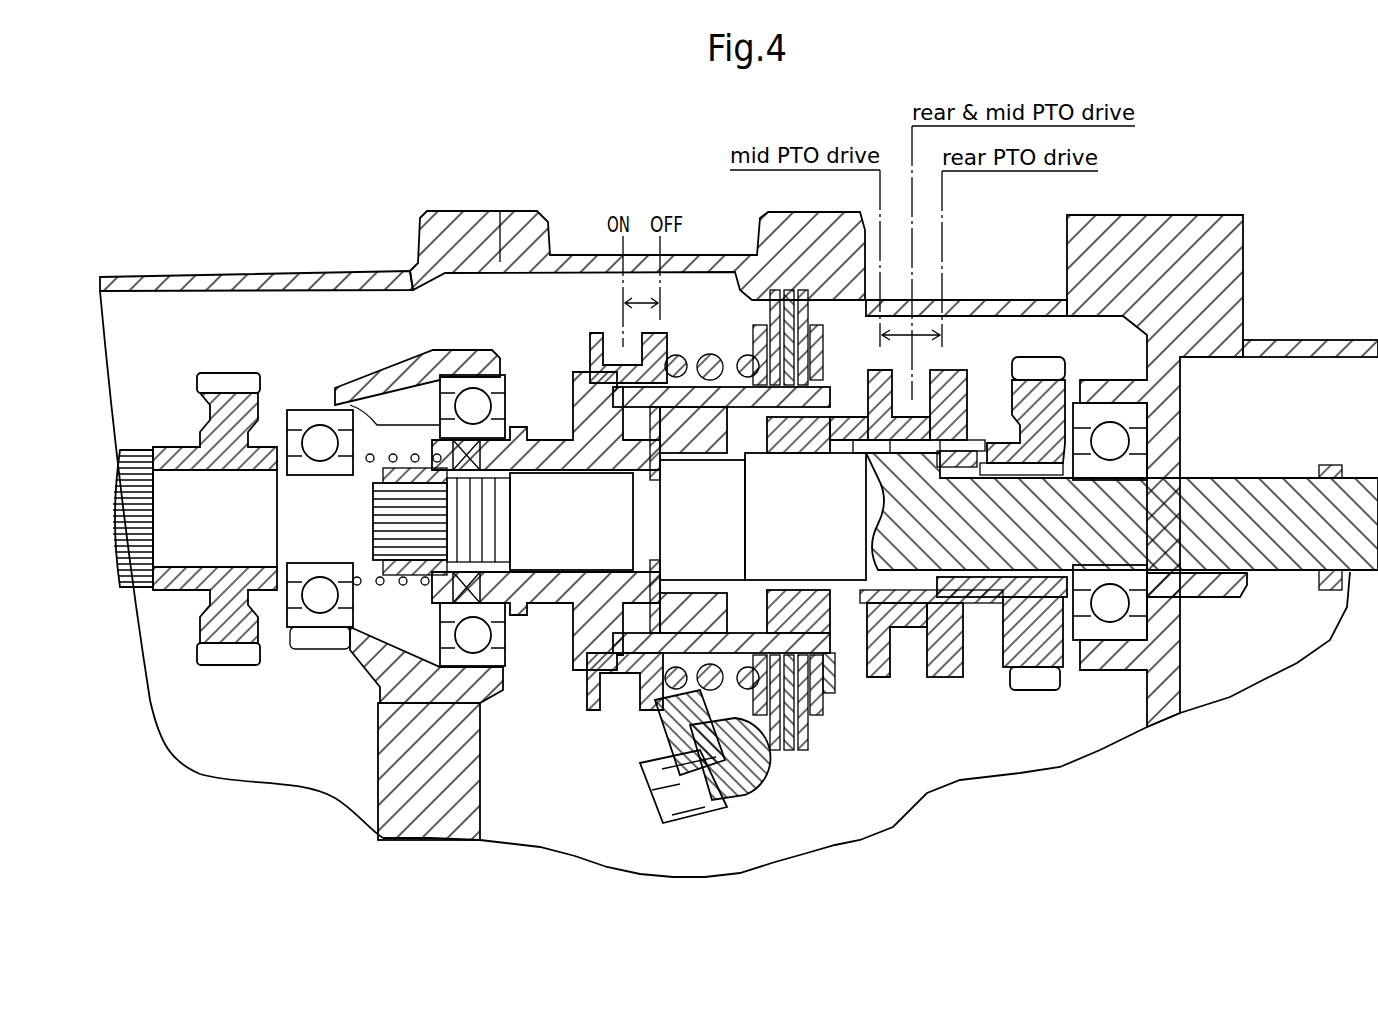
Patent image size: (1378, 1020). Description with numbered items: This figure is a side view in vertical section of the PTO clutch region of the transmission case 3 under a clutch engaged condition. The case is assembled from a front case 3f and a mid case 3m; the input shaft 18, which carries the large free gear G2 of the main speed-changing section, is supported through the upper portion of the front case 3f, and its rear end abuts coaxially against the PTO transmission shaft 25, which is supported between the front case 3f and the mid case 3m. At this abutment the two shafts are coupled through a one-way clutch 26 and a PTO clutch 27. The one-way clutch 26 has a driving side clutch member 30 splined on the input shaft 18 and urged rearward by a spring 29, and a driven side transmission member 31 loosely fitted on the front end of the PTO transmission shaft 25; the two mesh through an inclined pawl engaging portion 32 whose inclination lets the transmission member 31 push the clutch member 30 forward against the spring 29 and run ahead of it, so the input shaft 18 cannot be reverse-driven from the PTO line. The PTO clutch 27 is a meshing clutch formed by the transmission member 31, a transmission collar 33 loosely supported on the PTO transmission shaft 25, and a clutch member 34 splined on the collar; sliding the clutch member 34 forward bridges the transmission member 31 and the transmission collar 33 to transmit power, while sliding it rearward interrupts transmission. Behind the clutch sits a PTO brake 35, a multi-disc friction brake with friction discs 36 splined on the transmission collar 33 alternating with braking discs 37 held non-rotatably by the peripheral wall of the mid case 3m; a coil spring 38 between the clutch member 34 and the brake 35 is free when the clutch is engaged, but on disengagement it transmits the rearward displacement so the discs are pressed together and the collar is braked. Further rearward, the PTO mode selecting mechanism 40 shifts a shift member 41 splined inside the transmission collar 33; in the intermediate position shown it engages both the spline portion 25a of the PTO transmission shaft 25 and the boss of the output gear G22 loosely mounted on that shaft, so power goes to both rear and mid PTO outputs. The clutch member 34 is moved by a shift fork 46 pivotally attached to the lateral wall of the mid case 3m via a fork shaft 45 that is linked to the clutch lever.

The transmission case 3 is at (487, 208).
The front case 3f is at (255, 276).
The mid case 3m is at (1318, 339).
The input shaft 18 is at (175, 448).
The PTO transmission shaft 25 is at (1292, 477).
The spline portion 25a is at (904, 640).
The one-way clutch 26 is at (428, 437).
The PTO clutch 27 is at (570, 712).
The spring 29 is at (379, 588).
The driving side clutch member 30 is at (424, 586).
The driven side transmission member 31 is at (543, 604).
The inclined pawl engaging portion 32 is at (470, 445).
The transmission collar 33 is at (843, 652).
The clutch member 34 is at (589, 356).
The PTO brake 35 is at (813, 738).
The friction discs 36 is at (812, 340).
The braking discs 37 is at (754, 320).
The coil spring 38 is at (702, 357).
The PTO mode selecting mechanism 40 is at (975, 358).
The shift member 41 is at (950, 678).
The fork shaft 45 is at (748, 797).
The shift fork 46 is at (711, 815).
The large free gear G2 is at (228, 666).
The output gear G22 is at (1037, 690).